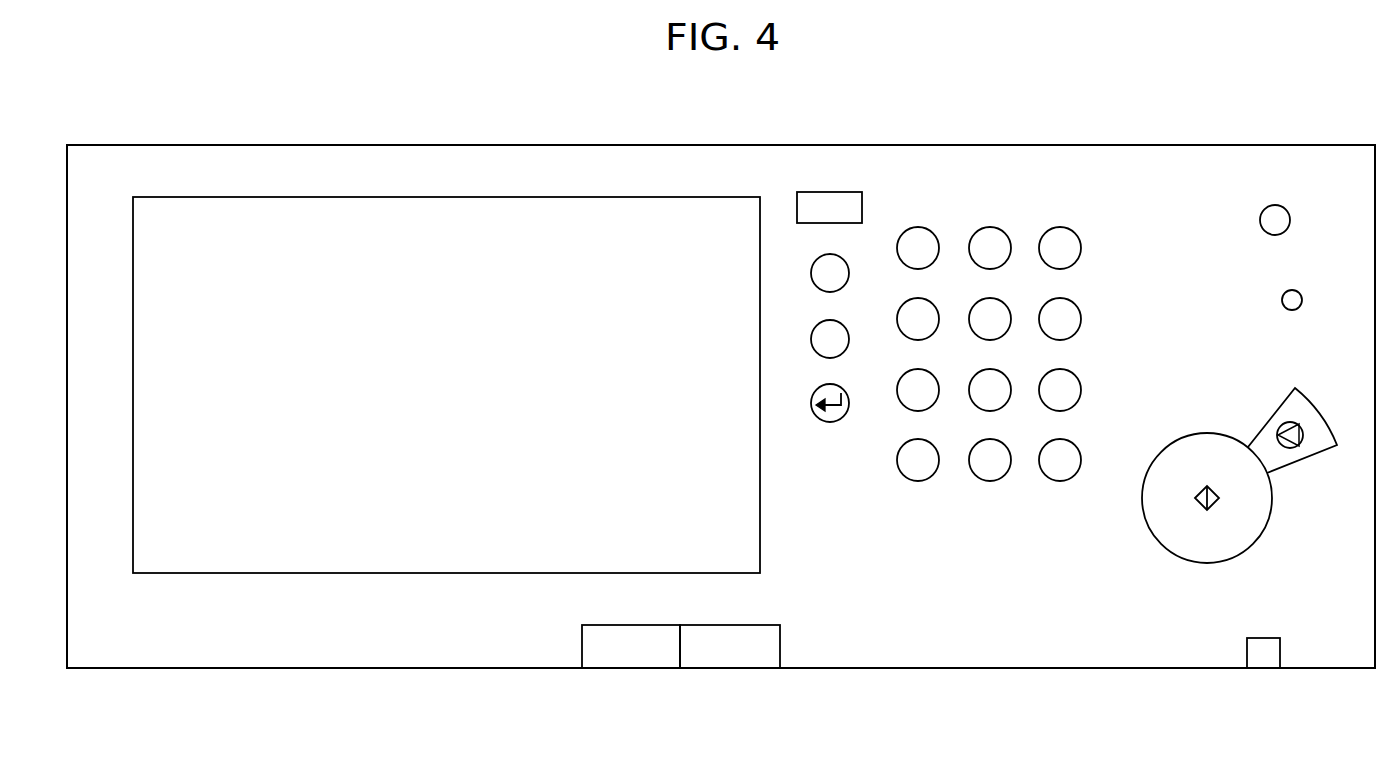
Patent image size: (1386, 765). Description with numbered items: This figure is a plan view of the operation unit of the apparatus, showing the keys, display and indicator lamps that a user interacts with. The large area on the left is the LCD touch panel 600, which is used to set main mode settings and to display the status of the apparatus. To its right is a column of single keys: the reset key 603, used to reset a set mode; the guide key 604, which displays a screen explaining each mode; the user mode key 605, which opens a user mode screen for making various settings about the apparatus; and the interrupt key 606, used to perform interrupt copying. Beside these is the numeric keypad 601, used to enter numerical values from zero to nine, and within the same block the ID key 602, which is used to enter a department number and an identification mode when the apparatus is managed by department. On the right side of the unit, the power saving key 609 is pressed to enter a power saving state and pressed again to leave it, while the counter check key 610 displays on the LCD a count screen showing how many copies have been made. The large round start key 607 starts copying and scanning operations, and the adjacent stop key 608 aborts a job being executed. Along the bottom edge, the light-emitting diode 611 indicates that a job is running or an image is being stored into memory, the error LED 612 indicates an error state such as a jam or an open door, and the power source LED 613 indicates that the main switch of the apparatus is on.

The LCD touch panel 600 is at (721, 364).
The numeric keypad 601 is at (993, 213).
The ID key 602 is at (917, 490).
The reset key 603 is at (797, 207).
The guide key 604 is at (812, 270).
The user mode key 605 is at (813, 333).
The interrupt key 606 is at (817, 417).
The start key 607 is at (1202, 535).
The stop key 608 is at (1277, 450).
The power saving key 609 is at (1290, 210).
The counter check key 610 is at (1294, 310).
The light-emitting diode (LED) 611 is at (625, 645).
The error LED 612 is at (737, 645).
The power source LED 613 is at (1267, 657).